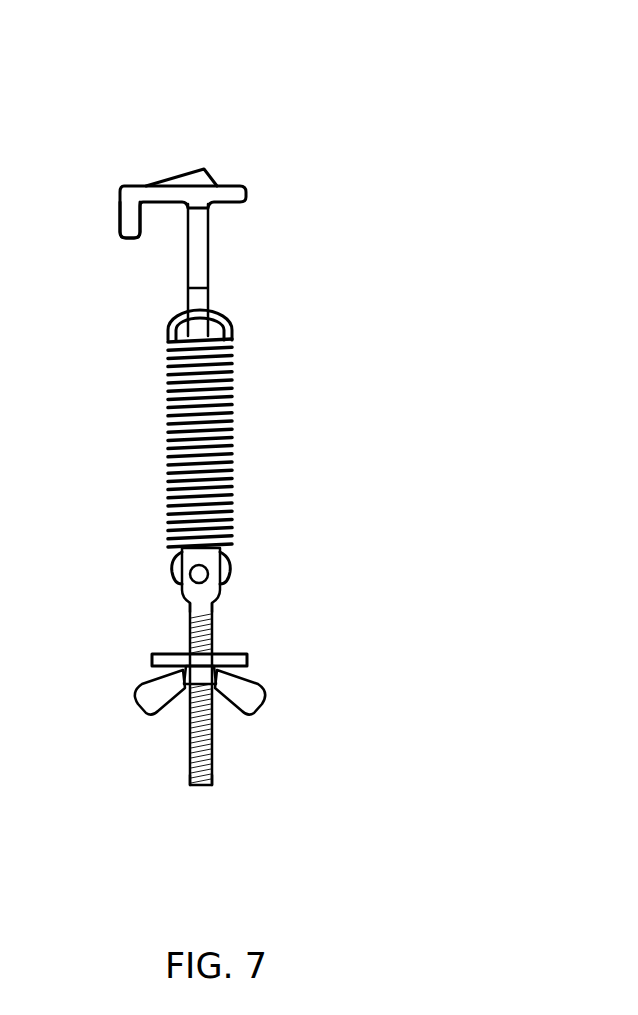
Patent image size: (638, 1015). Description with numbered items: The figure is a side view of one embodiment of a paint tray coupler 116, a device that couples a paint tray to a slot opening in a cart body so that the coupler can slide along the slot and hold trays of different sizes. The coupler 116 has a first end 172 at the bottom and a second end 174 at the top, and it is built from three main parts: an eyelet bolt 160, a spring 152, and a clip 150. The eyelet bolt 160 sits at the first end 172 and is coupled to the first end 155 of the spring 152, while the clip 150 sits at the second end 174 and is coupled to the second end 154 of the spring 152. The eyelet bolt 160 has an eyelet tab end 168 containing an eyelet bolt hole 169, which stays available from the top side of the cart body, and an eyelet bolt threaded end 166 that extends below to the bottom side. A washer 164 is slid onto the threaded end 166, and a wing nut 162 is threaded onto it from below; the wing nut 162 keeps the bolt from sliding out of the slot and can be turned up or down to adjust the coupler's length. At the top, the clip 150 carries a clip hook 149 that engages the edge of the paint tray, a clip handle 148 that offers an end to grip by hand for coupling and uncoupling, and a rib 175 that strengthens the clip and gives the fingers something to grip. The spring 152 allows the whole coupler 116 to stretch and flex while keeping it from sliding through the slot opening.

The paint tray coupler 116 is at (258, 98).
The clip handle 148 is at (234, 186).
The clip hook 149 is at (126, 218).
The clip 150 is at (203, 240).
The spring 152 is at (220, 380).
The second end of spring 154 is at (170, 342).
The first end of spring 155 is at (212, 548).
The eyelet bolt 160 is at (196, 750).
The wing nut 162 is at (245, 694).
The washer 164 is at (228, 656).
The eyelet bolt threaded end 166 is at (205, 781).
The eyelet tab end 168 is at (196, 559).
The eyelet bolt hole 169 is at (196, 580).
The first end 172 is at (367, 694).
The second end 174 is at (360, 246).
The rib 175 is at (190, 178).